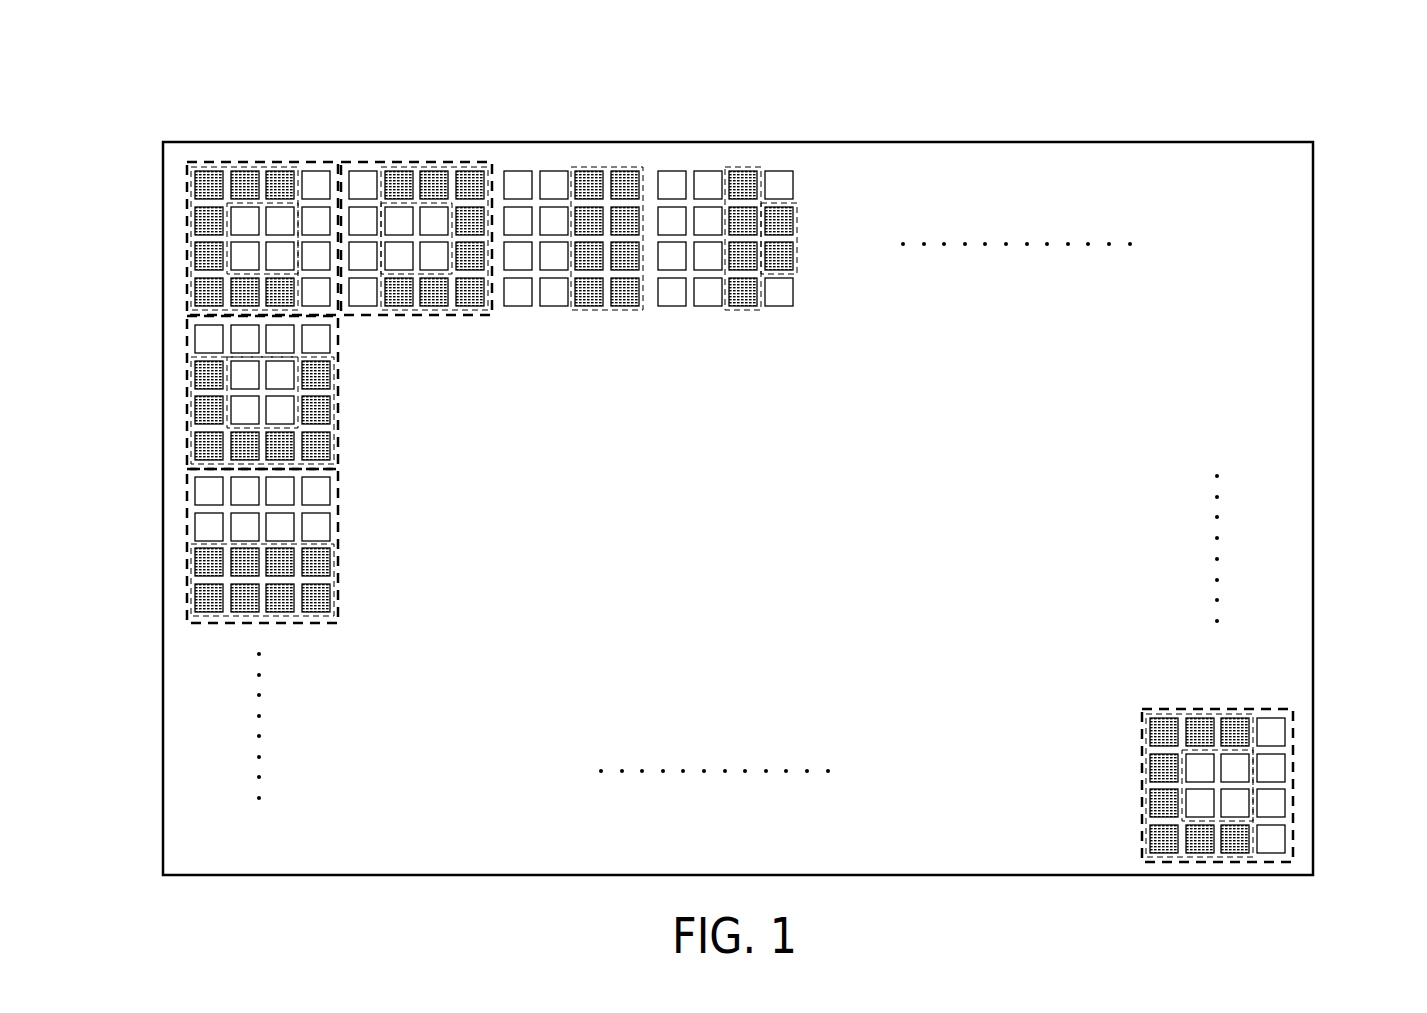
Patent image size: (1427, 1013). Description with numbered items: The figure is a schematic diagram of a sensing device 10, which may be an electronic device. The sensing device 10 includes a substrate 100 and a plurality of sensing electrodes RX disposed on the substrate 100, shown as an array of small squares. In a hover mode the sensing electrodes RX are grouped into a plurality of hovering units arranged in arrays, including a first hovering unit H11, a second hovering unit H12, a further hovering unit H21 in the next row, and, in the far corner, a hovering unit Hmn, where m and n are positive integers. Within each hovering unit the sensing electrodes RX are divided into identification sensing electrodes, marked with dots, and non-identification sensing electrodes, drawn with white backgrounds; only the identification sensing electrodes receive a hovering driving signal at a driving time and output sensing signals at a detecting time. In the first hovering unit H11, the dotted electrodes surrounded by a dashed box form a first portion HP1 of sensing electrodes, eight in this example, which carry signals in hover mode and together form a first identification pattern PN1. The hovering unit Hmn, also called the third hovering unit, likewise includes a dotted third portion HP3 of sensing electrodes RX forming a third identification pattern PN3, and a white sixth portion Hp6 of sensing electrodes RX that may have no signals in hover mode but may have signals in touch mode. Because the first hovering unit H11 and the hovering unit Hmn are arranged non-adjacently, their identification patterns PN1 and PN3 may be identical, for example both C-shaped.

The sensing device 10 is at (1338, 112).
The substrate 100 is at (1313, 250).
The sensing electrodes RX is at (200, 186).
The first hovering unit H11 is at (246, 163).
The second hovering unit H12 is at (430, 163).
The pixel unit (row 2, column 1) H21 is at (190, 375).
The hovering unit Hmn is at (1296, 770).
The first portion of sensing electrodes HP1 is at (190, 262).
The first identification pattern PN1 is at (173, 250).
The third portion of sensing electrodes HP3 is at (1241, 713).
The third identification pattern PN3 is at (1292, 754).
The sixth portion of sensing electrodes Hp6 is at (1291, 810).